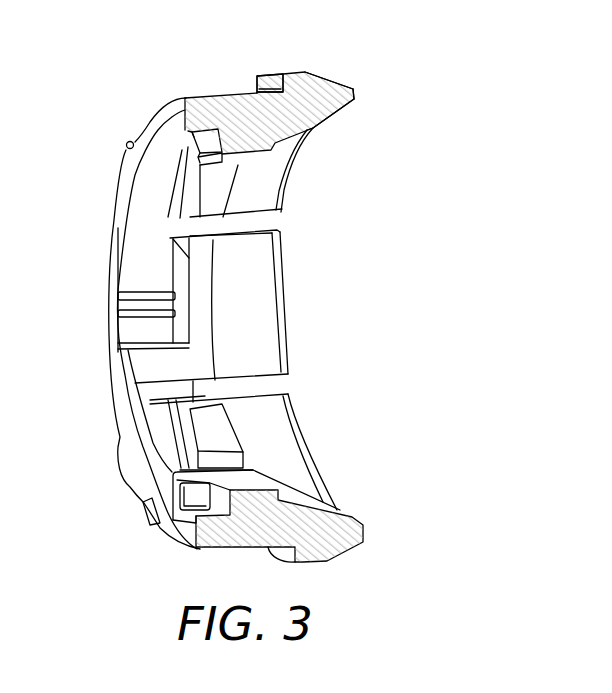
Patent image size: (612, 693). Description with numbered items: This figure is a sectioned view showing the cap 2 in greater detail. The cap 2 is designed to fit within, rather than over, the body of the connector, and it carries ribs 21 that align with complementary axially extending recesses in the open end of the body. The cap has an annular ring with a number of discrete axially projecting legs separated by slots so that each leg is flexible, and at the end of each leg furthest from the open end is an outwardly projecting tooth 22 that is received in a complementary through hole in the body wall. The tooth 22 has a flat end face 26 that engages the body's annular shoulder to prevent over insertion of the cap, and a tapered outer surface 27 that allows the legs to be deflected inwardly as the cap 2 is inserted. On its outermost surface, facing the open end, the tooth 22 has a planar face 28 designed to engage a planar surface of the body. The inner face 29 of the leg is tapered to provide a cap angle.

The cap 2 is at (374, 228).
The ribs 21 is at (128, 147).
The tooth 22 is at (313, 87).
The flat end face 26 is at (355, 96).
The tapered outer surface 27 is at (339, 78).
The planar face 28 is at (268, 80).
The inner face 29 is at (325, 125).